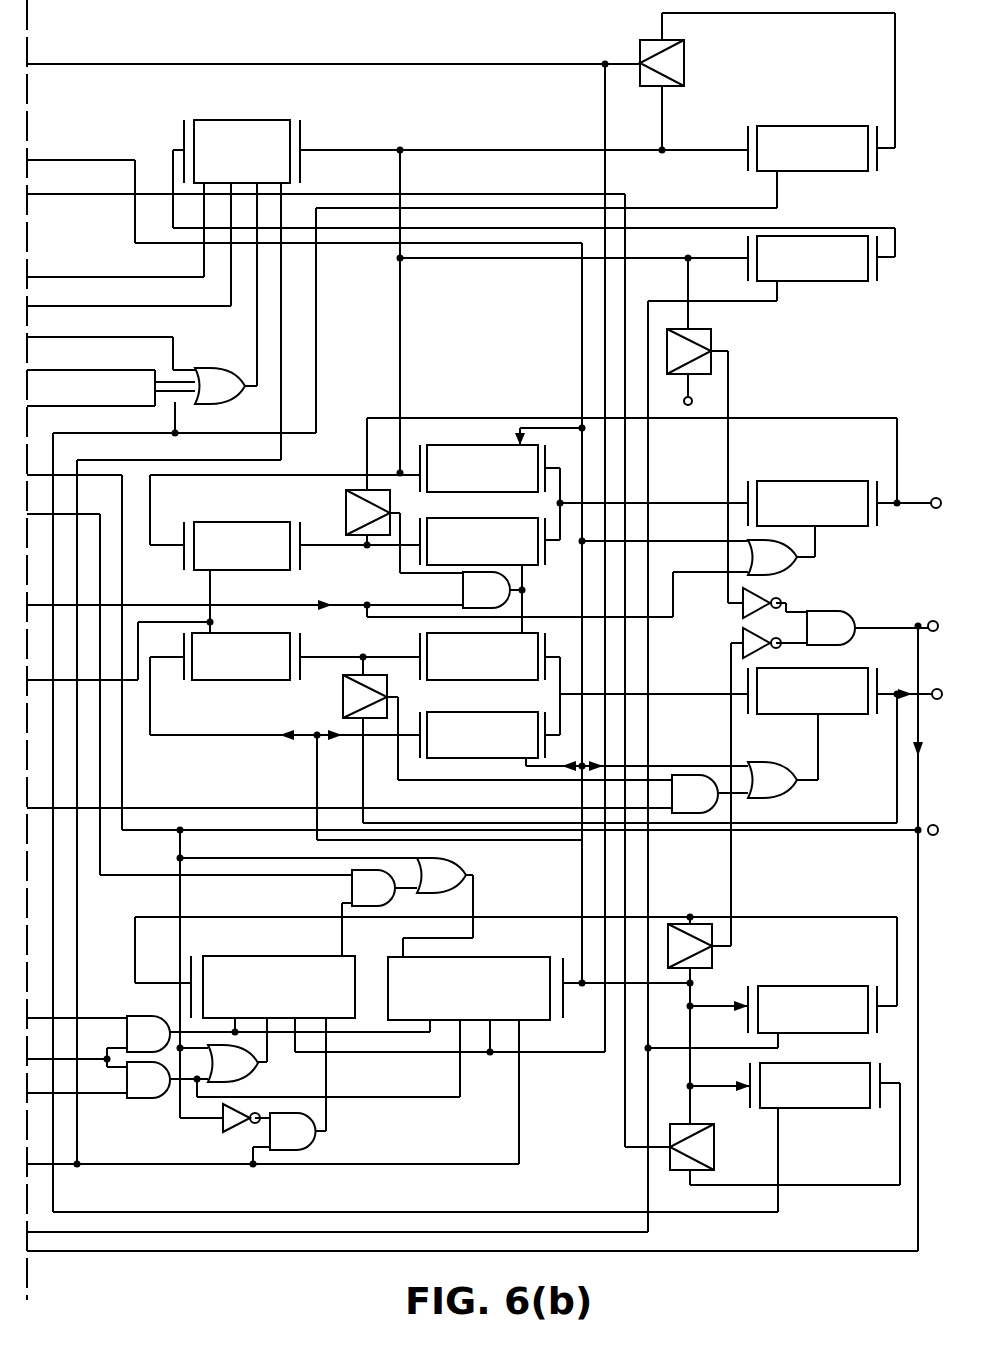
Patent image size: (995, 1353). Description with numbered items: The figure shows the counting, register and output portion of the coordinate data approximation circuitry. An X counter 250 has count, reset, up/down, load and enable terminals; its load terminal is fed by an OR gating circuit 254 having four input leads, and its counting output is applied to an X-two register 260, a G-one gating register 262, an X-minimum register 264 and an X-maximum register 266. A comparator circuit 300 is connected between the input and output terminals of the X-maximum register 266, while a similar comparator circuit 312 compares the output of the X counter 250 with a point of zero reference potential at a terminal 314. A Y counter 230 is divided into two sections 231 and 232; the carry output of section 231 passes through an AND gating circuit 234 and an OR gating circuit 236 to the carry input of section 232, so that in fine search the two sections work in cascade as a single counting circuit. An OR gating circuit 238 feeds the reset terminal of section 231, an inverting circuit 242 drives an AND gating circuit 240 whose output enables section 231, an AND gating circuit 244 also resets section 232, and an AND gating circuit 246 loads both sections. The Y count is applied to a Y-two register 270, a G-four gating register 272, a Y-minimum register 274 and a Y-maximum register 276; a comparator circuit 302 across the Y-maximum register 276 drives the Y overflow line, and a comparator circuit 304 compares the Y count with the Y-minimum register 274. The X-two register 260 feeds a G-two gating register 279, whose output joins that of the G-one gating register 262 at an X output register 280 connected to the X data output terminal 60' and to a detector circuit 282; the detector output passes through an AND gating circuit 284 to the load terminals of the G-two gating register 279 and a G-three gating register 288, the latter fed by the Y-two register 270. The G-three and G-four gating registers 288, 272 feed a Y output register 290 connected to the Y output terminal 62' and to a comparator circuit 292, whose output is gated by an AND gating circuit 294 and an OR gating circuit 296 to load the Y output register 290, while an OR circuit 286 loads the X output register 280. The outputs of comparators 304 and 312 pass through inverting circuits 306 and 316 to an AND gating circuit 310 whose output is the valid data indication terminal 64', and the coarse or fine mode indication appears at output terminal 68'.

The X counter 250 is at (230, 120).
The comparator circuit 300 is at (684, 58).
The X maximum register 266 is at (808, 126).
The X minimum register 264 is at (812, 282).
The comparator circuit 312 is at (700, 340).
The terminal 314 is at (705, 393).
The OR gating circuit 254 is at (222, 402).
The G1 gating register 262 is at (450, 428).
The G2 gating register 279 is at (450, 502).
The detector circuit 282 is at (346, 514).
The X2 register 260 is at (228, 524).
The X output register 280 is at (812, 500).
The AND gating circuit 284 is at (463, 592).
The OR circuit 286 is at (780, 572).
The inverter circuit 316 is at (741, 610).
The inverting circuit 306 is at (741, 640).
The AND gating circuit 310 is at (833, 610).
The Y2 register 270 is at (222, 680).
The comparator circuit 292 is at (342, 710).
The G3 gating register 288 is at (500, 681).
The G4 gating register 272 is at (474, 710).
The AND gating circuit 294 is at (700, 775).
The OR gating circuit 296 is at (782, 770).
The Y output register 290 is at (840, 715).
The OR gating circuit 236 is at (452, 863).
The AND gating circuit 234 is at (352, 890).
The first section of Y counter 231 is at (240, 956).
The second section of Y counter 232 is at (485, 956).
The Y counter 230 is at (382, 1063).
The AND gating circuit 246 is at (134, 1015).
The AND gating circuit 244 is at (140, 1102).
The OR gating circuit 238 is at (244, 1082).
The inverting circuit 242 is at (230, 1128).
The AND gating circuit 240 is at (305, 1148).
The comparator circuit 304 is at (710, 960).
The comparator circuit 302 is at (712, 1150).
The Y minimum register 274 is at (800, 1034).
The Y maximum register 276 is at (804, 1109).
The X data output terminal 60' is at (918, 506).
The Y output terminal 62' is at (904, 686).
The valid data output indication terminal 64' is at (905, 618).
The coarse/fine mode output terminal 68' is at (535, 817).